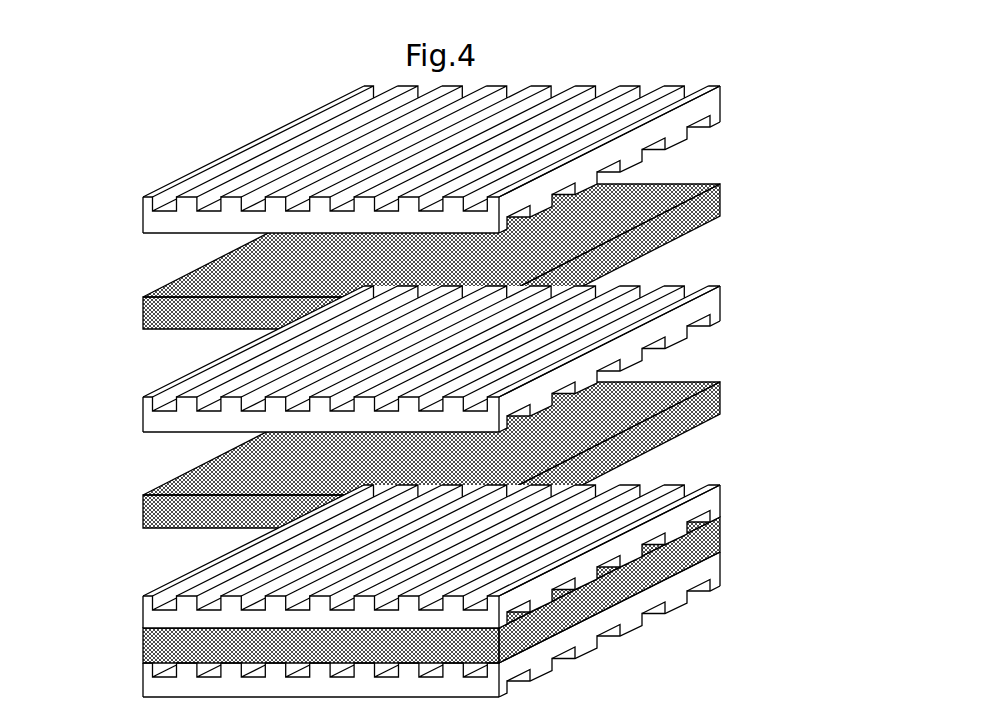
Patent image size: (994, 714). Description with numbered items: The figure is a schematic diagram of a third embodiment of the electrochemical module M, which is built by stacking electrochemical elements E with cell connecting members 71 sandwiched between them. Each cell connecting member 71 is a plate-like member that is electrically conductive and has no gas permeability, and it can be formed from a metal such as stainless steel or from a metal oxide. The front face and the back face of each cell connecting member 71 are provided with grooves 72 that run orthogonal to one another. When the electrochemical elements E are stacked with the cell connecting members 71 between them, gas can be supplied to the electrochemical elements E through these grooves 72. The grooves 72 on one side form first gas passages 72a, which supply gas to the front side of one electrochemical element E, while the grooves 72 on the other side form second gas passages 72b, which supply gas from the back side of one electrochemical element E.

The electrochemical module M is at (106, 138).
The cell connecting member 71 is at (130, 216).
The electrochemical element E is at (130, 315).
The groove 72 is at (802, 70).
The first gas passage 72a is at (703, 124).
The second gas passage 72b is at (699, 86).